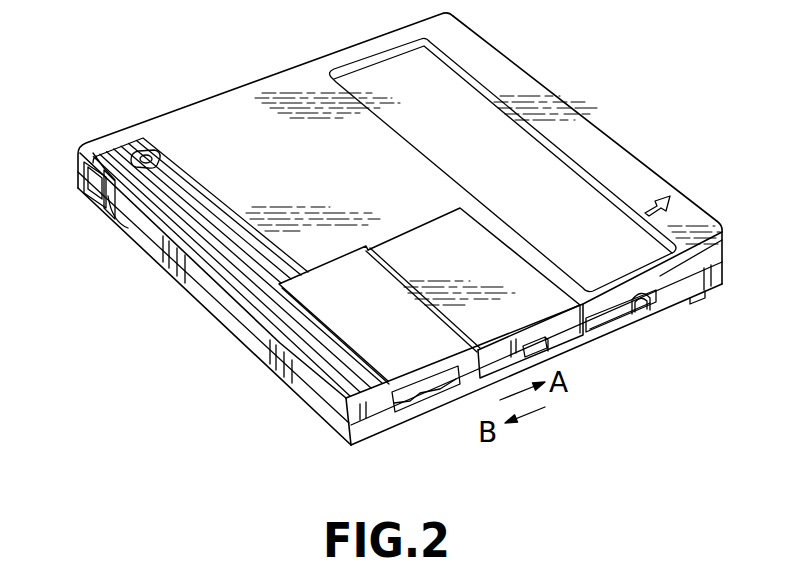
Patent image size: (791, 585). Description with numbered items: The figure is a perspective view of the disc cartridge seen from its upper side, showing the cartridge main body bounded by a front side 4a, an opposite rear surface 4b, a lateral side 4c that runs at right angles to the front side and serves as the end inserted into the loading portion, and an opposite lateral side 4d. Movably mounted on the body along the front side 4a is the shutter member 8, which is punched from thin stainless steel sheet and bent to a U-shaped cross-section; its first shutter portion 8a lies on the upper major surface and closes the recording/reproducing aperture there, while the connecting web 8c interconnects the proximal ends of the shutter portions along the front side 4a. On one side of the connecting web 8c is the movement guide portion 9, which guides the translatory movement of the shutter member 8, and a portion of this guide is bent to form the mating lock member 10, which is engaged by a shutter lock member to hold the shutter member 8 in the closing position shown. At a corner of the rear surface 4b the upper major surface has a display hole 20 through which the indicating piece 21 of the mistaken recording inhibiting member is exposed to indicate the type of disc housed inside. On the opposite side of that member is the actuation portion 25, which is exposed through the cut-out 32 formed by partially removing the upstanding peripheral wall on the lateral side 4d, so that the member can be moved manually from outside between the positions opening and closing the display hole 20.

The front side 4a is at (427, 383).
The rear surface 4b is at (273, 75).
The lateral side 4c is at (604, 127).
The lateral side 4d is at (222, 326).
The shutter member 8 is at (444, 324).
The first shutter portion 8a is at (410, 237).
The connecting web 8c is at (490, 386).
The movement guide portion 9 is at (600, 338).
The mating lock member 10 is at (650, 305).
The display hole 20 is at (142, 156).
The indicating piece 21 is at (121, 196).
The actuation portion 25 is at (82, 188).
The cut-out 32 is at (107, 207).